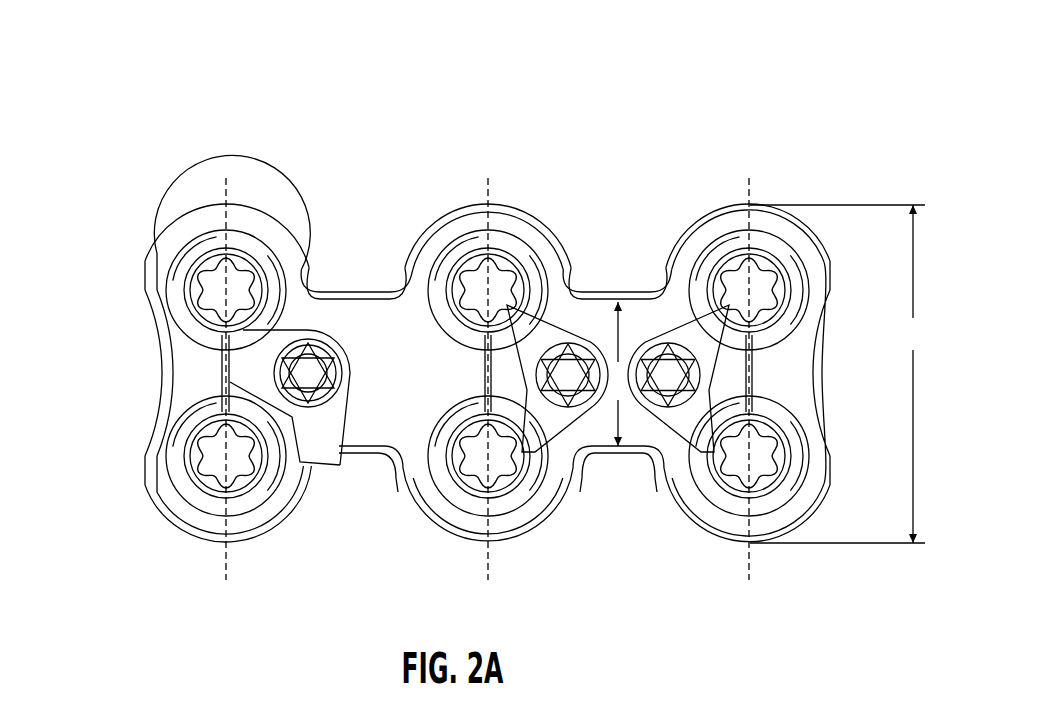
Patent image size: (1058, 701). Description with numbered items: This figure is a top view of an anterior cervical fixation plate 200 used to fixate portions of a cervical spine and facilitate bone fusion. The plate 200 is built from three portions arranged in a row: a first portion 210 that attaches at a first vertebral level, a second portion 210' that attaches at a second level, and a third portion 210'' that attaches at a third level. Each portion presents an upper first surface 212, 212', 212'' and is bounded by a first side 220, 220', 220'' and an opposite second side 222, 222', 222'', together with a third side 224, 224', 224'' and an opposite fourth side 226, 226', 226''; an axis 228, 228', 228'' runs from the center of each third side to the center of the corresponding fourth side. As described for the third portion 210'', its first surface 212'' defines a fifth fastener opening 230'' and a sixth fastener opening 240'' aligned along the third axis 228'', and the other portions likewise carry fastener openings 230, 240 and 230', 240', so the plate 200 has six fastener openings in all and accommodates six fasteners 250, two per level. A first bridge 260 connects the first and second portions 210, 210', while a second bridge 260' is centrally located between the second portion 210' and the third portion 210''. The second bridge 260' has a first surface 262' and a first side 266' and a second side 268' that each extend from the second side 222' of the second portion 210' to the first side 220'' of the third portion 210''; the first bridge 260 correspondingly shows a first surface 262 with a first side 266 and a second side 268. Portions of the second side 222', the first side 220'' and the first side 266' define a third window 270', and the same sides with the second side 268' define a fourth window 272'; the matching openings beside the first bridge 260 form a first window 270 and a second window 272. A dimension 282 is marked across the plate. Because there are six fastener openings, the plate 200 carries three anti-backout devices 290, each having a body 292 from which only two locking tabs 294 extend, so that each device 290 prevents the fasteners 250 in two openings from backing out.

The anterior cervical fixation plate 200 is at (820, 90).
The first portion 210 is at (173, 247).
The second portion 210' is at (506, 263).
The third portion 210'' is at (760, 274).
The lateral side of segment 212 is at (128, 373).
The lateral side of second segment 212' is at (508, 518).
The first surface 212'' is at (853, 373).
The gap / spacing 220 is at (355, 347).
The bridge edge 220' is at (355, 249).
The first side 220'' is at (622, 249).
The upper lobe 222 is at (270, 213).
The second side 222' is at (536, 212).
The second side 222'' is at (818, 247).
The outer edge 224 is at (182, 218).
The outer edge 224' is at (471, 204).
The third side 224'' is at (734, 201).
The lower lobe 226 is at (223, 521).
The lower lobe 226' is at (488, 547).
The fourth side 226'' is at (747, 541).
The segment centerline 228 is at (188, 339).
The segment centerline 228' is at (444, 336).
The third axis 228'' is at (709, 336).
The fastener opening 230 is at (196, 262).
The fastener opening 230' is at (462, 259).
The fifth fastener opening 230'' is at (721, 259).
The fastener opening 240 is at (196, 473).
The fastener opening 240' is at (477, 495).
The sixth fastener opening 240'' is at (739, 495).
The fastener 250 is at (164, 277).
The first bridge 260 is at (344, 506).
The second bridge 260' is at (618, 488).
The upper bridge 262 is at (374, 271).
The first surface 262' is at (639, 264).
The upper bridge inner edge 266 is at (357, 247).
The first side 266' is at (617, 248).
The lower bridge 268 is at (369, 495).
The second side 268' is at (630, 493).
The upper connector 270 is at (331, 201).
The third window 270' is at (599, 194).
The lower connector 272 is at (367, 520).
The fourth window 272' is at (603, 532).
The plate height 282 is at (839, 374).
The anti-backout device 290 is at (352, 347).
The body 292 is at (350, 368).
The locking tab 294 is at (320, 437).